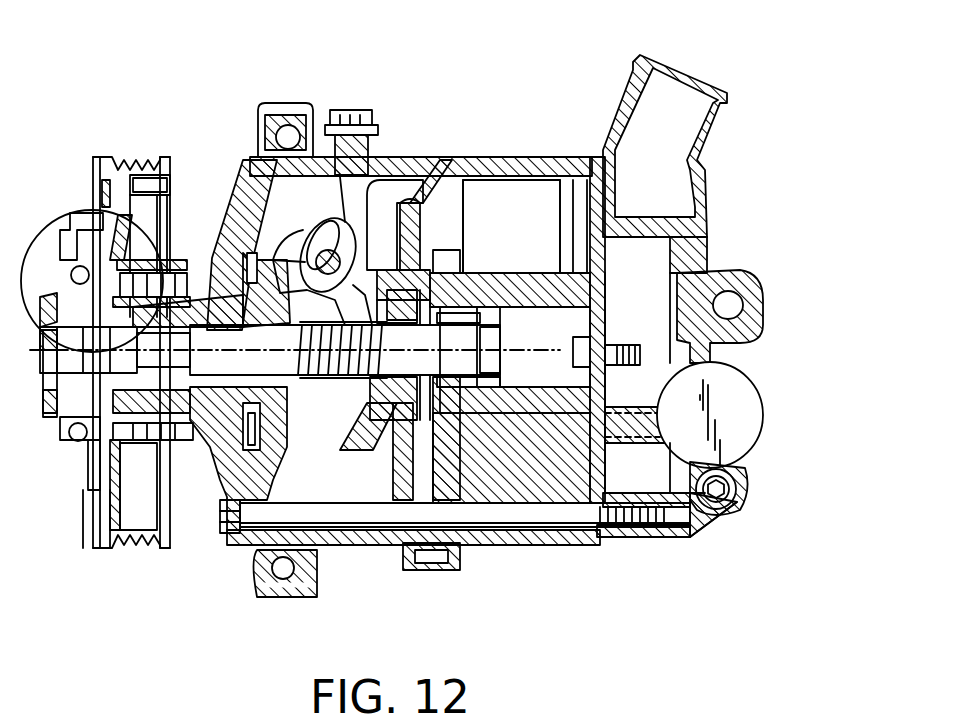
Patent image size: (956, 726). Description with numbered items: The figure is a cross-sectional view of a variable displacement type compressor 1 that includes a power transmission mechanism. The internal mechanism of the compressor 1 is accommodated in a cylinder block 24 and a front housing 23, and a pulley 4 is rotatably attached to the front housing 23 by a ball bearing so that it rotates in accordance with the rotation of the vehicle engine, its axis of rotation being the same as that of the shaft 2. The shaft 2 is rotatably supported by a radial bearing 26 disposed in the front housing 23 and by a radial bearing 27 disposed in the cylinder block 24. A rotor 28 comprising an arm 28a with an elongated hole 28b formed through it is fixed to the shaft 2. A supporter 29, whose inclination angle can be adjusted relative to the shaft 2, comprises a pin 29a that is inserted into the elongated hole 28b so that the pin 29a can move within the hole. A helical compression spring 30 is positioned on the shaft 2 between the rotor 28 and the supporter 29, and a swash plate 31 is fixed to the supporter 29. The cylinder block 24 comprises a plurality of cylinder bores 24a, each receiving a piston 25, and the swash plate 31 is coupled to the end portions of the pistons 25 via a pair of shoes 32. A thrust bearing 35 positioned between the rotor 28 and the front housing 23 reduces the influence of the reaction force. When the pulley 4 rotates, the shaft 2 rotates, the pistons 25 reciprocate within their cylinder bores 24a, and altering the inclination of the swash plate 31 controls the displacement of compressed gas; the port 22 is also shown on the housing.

The compressor 1 is at (433, 103).
The shaft 2 is at (307, 377).
The pulley 4 is at (123, 165).
The discharge port 22 is at (543, 153).
The front housing 23 is at (297, 257).
The cylinder block 24 is at (570, 507).
The cylinder bore 24a is at (493, 160).
The piston 25 is at (543, 180).
The radial bearing 26 is at (213, 313).
The radial bearing 27 is at (493, 440).
The rotor 28 is at (250, 547).
The arm 28a is at (290, 265).
The elongated hole 28b is at (317, 220).
The supporter 29 is at (365, 430).
The pin 29a is at (363, 120).
The helical compression spring 30 is at (330, 377).
The swash plate 31 is at (440, 193).
The shoe 32 is at (400, 207).
The thrust bearing 35 is at (213, 463).